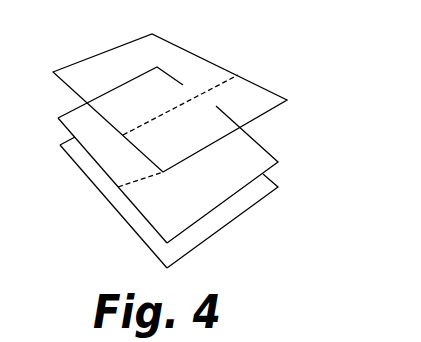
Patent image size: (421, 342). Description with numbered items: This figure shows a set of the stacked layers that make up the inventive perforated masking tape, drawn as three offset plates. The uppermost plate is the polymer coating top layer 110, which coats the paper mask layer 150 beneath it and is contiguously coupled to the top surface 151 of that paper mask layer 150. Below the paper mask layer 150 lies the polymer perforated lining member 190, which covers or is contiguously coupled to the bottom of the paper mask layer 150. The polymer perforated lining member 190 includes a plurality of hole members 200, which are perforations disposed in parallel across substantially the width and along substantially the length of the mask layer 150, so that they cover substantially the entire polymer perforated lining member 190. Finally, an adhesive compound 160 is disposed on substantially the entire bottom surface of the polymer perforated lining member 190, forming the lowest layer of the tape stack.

The polymer coating top layer 110 is at (258, 35).
The hole members 200 is at (240, 74).
The paper mask layer 150 is at (248, 155).
The top surface 151 is at (88, 131).
The adhesive compound 160 is at (229, 230).
The polymer perforated lining member 190 is at (102, 191).